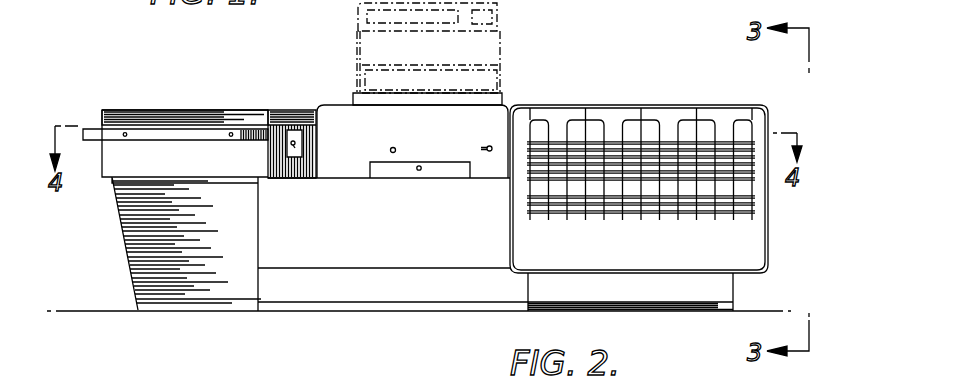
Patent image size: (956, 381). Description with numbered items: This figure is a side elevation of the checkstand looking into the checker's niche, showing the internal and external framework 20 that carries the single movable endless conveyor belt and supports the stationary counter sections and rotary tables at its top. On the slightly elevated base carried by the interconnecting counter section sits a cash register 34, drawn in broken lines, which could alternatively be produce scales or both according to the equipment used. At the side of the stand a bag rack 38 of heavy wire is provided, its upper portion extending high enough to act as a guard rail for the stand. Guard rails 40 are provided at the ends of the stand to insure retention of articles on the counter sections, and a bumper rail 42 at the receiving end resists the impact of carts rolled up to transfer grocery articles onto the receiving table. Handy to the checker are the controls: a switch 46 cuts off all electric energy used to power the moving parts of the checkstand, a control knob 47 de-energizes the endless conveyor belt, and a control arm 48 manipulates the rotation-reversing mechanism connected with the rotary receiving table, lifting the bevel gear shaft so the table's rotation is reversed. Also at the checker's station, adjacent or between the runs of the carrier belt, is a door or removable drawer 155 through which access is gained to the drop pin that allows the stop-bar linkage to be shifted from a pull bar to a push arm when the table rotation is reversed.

The framework 20 is at (126, 250).
The cash register 34 is at (500, 12).
The bag racks 38 is at (549, 118).
The guard rails 40 is at (186, 116).
The bumper rail 42 is at (90, 128).
The switch 46 is at (293, 141).
The control knob 47 is at (393, 147).
The control arm 48 is at (489, 146).
The removable drawer 155 is at (433, 172).